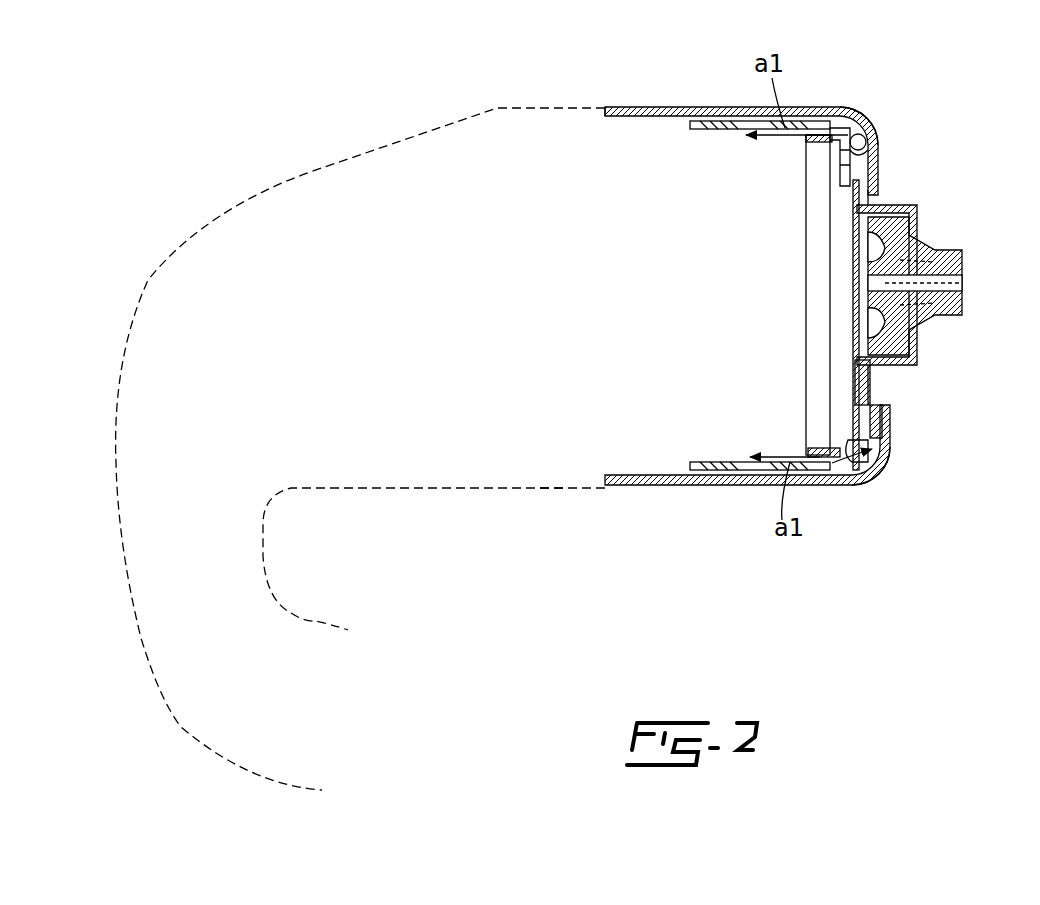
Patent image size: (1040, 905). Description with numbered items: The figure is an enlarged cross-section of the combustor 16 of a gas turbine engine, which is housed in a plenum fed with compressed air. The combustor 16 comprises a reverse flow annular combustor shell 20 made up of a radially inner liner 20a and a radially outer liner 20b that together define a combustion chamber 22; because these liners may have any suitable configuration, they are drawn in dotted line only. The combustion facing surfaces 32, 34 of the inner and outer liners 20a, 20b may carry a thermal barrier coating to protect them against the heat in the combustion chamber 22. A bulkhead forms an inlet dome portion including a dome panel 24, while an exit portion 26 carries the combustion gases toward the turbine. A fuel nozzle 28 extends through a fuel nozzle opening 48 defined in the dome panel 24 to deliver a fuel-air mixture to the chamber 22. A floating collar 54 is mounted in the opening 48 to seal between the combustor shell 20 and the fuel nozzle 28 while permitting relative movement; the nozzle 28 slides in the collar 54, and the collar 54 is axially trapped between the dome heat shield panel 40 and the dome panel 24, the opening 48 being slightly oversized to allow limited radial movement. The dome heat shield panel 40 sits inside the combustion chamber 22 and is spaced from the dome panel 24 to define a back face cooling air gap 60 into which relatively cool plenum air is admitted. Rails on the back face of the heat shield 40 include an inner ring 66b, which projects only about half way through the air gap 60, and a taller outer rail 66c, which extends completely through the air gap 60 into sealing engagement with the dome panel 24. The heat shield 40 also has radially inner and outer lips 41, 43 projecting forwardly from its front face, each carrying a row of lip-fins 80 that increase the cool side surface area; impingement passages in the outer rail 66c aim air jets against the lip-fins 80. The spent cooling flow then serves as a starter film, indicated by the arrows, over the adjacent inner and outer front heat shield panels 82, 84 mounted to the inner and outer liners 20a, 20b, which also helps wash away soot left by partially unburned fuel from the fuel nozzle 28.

The combustor 16 is at (143, 241).
The combustor shell 20 is at (668, 296).
The radially inner liner 20a is at (560, 497).
The radially outer liner 20b is at (592, 88).
The combustion chamber 22 is at (514, 249).
The dome panel 24 is at (852, 180).
The exit portion 26 is at (317, 716).
The fuel nozzle 28 is at (932, 245).
The combustion facing surface of inner liner 32 is at (552, 470).
The combustion facing surface of outer liner 34 is at (602, 122).
The dome heat shield panel 40 is at (822, 153).
The radially inner lip 41 is at (803, 445).
The radially outer lip 43 is at (808, 143).
The fuel nozzle opening 48 is at (888, 382).
The floating collar 54 is at (904, 200).
The air gap 60 is at (868, 413).
The inner ring 66b is at (882, 410).
The outer rail 66c is at (872, 158).
The lip-fin 80 is at (848, 122).
The inner front heat shield panel 82 is at (722, 460).
The outer front heat shield panel 84 is at (712, 130).